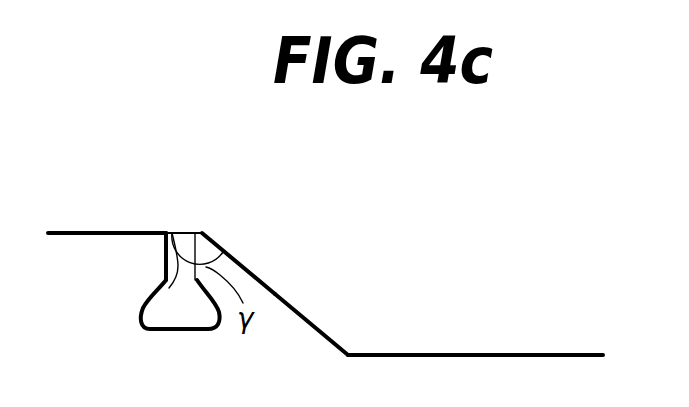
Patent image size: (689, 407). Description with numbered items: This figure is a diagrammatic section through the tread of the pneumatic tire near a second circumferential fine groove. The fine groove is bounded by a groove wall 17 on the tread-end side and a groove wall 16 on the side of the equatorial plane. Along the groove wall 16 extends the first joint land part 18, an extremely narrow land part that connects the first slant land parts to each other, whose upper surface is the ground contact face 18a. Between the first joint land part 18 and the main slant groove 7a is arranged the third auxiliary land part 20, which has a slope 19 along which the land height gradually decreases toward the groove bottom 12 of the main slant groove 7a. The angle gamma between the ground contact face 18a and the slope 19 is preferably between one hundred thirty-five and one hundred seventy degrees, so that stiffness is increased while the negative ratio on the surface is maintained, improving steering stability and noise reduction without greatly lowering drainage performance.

The main slant groove 7a is at (553, 356).
The groove bottom 12 is at (463, 355).
The groove wall 16 is at (208, 328).
The groove wall 17 is at (164, 278).
The first joint land part 18 is at (200, 233).
The ground contact face 18a is at (203, 233).
The slope 19 is at (317, 322).
The third auxiliary land part 20 is at (285, 298).